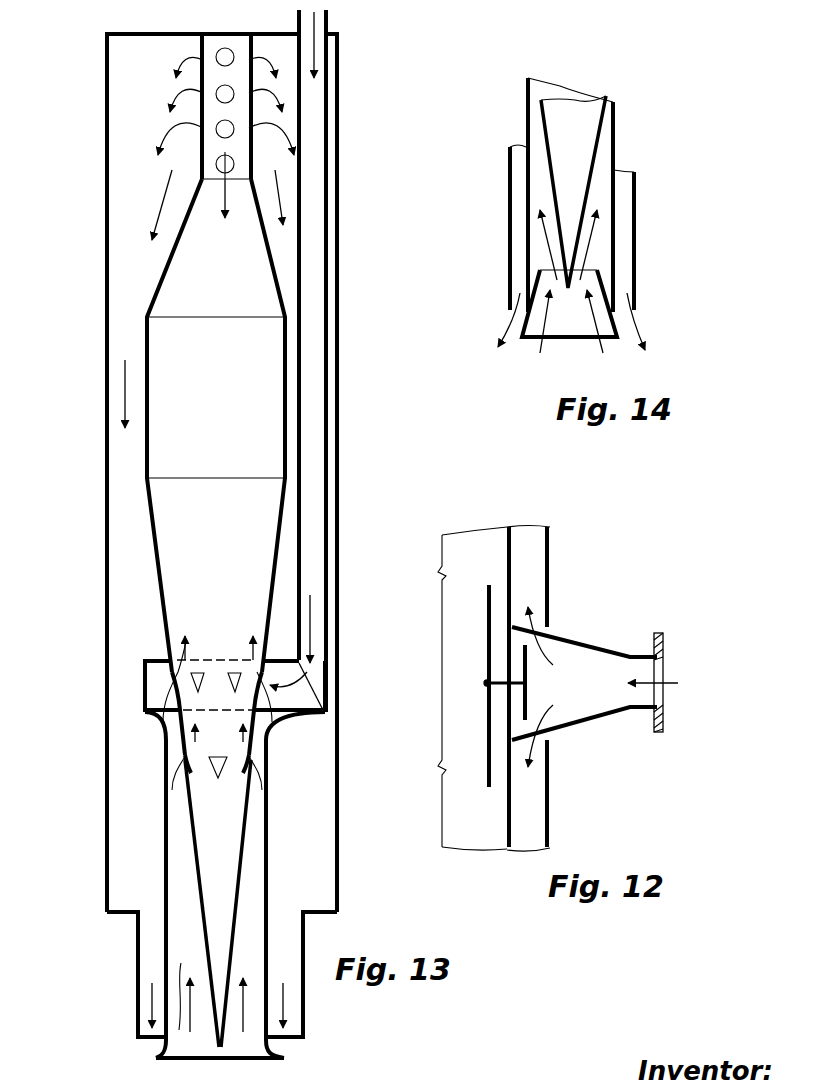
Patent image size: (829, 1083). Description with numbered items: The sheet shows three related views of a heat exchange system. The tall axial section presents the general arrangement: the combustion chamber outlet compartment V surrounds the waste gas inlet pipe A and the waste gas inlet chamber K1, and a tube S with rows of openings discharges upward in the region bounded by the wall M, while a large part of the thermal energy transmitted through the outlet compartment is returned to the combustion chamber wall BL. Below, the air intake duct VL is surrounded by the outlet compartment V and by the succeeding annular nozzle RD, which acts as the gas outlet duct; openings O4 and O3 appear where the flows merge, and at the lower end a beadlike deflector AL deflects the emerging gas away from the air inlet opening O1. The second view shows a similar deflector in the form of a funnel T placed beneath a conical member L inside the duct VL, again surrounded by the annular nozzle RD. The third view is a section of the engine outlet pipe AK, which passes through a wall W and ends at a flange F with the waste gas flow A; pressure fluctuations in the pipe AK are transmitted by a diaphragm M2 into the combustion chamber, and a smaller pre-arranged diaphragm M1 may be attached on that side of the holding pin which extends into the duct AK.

In FIG. 13, the spray tube S is at (225, 43).
In FIG. 13, the waste gas inlet pipe A is at (329, 25).
In FIG. 12, the waste gas inlet pipe A is at (664, 697).
In FIG. 13, the mantle / wall of separating chamber M is at (339, 428).
In FIG. 13, the combustion chamber wall BL is at (233, 406).
In FIG. 12, the combustion chamber wall BL is at (485, 638).
In FIG. 13, the combustion chamber outlet compartment V is at (117, 606).
In FIG. 13, the fourth opening O4 is at (176, 674).
In FIG. 13, the waste gas inlet chamber K1 is at (303, 699).
In FIG. 12, the waste gas inlet chamber K1 is at (540, 817).
In FIG. 13, the third opening O3 is at (190, 757).
In FIG. 13, the air intake duct VL is at (178, 838).
In FIG. 14, the air intake duct VL is at (538, 255).
In FIG. 13, the annular nozzle RD is at (152, 961).
In FIG. 14, the annular nozzle RD is at (625, 230).
In FIG. 13, the air inlet opening O1 is at (186, 984).
In FIG. 13, the beadlike deflector AL is at (272, 1047).
In FIG. 14, the baffle cone L is at (575, 130).
In FIG. 14, the funnel T is at (537, 317).
In FIG. 12, the wall W is at (551, 569).
In FIG. 12, the flange F is at (677, 624).
In FIG. 12, the engine outlet pipe AK is at (610, 695).
In FIG. 12, the pre-arranged diaphragm M1 is at (562, 724).
In FIG. 12, the diaphragm M2 is at (487, 773).